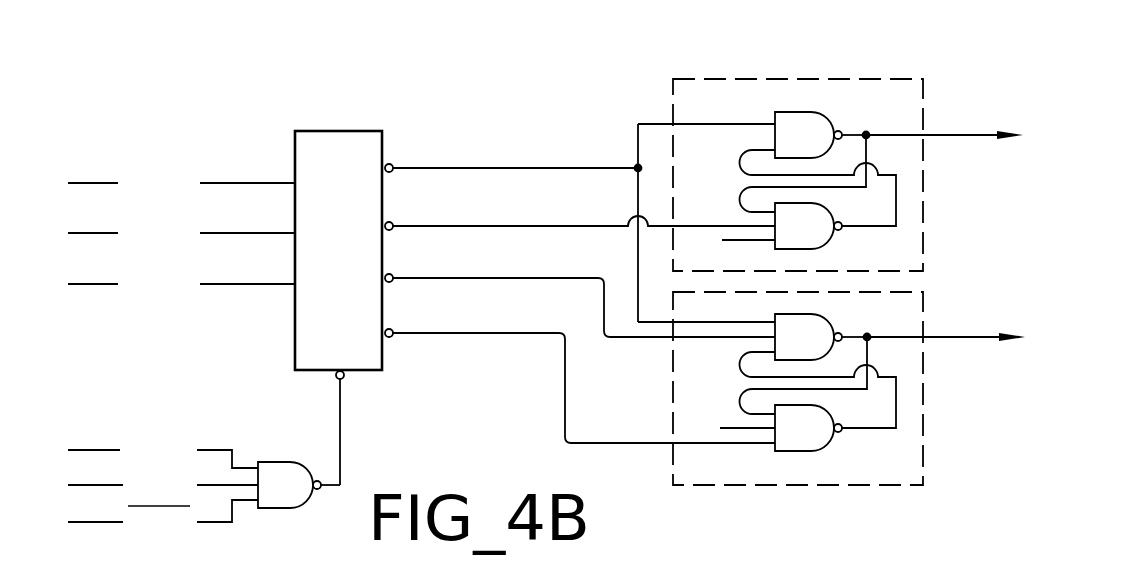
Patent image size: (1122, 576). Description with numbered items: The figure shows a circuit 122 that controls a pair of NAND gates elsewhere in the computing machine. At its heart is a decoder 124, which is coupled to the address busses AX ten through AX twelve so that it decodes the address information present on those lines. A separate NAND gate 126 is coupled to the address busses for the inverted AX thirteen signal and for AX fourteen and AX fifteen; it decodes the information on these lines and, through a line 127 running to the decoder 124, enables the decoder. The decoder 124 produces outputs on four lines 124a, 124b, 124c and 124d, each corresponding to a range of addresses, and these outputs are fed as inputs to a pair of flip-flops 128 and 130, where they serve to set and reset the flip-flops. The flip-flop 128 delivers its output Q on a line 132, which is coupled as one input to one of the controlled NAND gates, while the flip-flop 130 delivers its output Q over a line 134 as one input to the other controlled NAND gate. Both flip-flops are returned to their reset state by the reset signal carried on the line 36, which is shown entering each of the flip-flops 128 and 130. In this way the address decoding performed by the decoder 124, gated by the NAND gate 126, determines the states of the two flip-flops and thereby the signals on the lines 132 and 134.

The circuit 122 is at (356, 90).
The decoder 124 is at (295, 345).
The line 124a is at (600, 165).
The line 124b is at (604, 224).
The line 124c is at (614, 340).
The line 124d is at (630, 445).
The NAND gate 126 is at (292, 508).
The line 127 is at (343, 427).
The flip-flop 128 is at (815, 66).
The flip-flop 130 is at (945, 464).
The line 132 is at (972, 133).
The line 134 is at (972, 335).
The line 36 is at (745, 242).